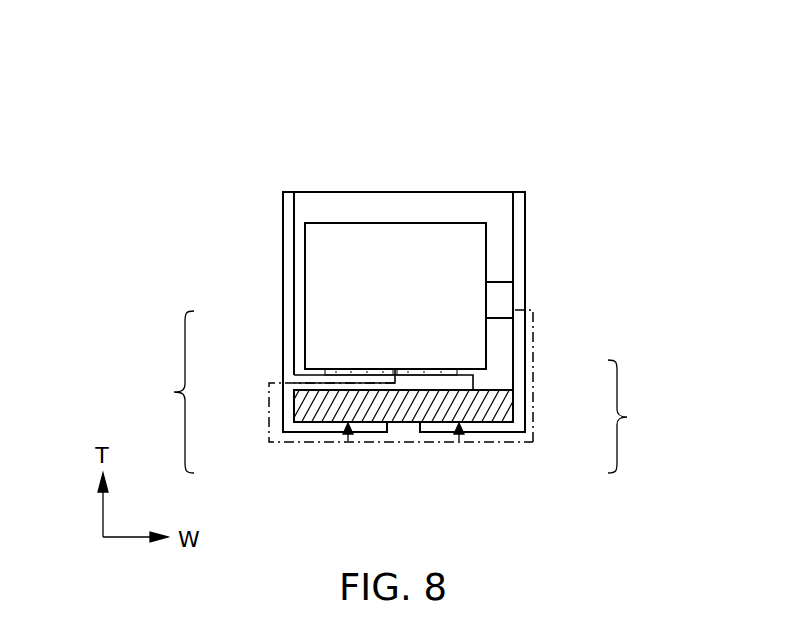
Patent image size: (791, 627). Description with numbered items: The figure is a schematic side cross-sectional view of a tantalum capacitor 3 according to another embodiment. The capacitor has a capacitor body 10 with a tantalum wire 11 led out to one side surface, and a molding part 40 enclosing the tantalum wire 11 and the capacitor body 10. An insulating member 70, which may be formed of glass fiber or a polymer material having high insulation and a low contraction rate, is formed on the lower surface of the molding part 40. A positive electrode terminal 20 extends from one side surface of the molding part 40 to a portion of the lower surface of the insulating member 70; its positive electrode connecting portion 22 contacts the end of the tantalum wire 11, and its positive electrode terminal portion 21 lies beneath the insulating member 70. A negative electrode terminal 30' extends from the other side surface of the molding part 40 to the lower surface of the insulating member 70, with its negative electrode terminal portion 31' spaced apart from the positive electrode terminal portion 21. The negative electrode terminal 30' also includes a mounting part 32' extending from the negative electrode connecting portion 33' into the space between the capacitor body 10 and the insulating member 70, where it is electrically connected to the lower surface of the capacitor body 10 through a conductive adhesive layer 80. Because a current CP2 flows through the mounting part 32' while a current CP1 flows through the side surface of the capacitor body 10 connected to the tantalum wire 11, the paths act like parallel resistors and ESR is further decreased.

The tantalum capacitor 3 is at (393, 98).
The molding part 40 is at (400, 212).
The capacitor body 10 is at (463, 260).
The tantalum wire 11 is at (497, 298).
The negative electrode connecting portion 33' is at (245, 283).
The mounting part 32' is at (335, 373).
The negative electrode terminal portion 31' is at (292, 452).
The negative electrode terminal 30' is at (165, 392).
The insulating member 70 is at (400, 410).
The conductive adhesive layer 80 is at (430, 372).
The current CP2 is at (352, 447).
The current CP1 is at (464, 447).
The positive electrode connecting portion 22 is at (519, 371).
The positive electrode terminal portion 21 is at (488, 425).
The positive electrode terminal 20 is at (633, 416).